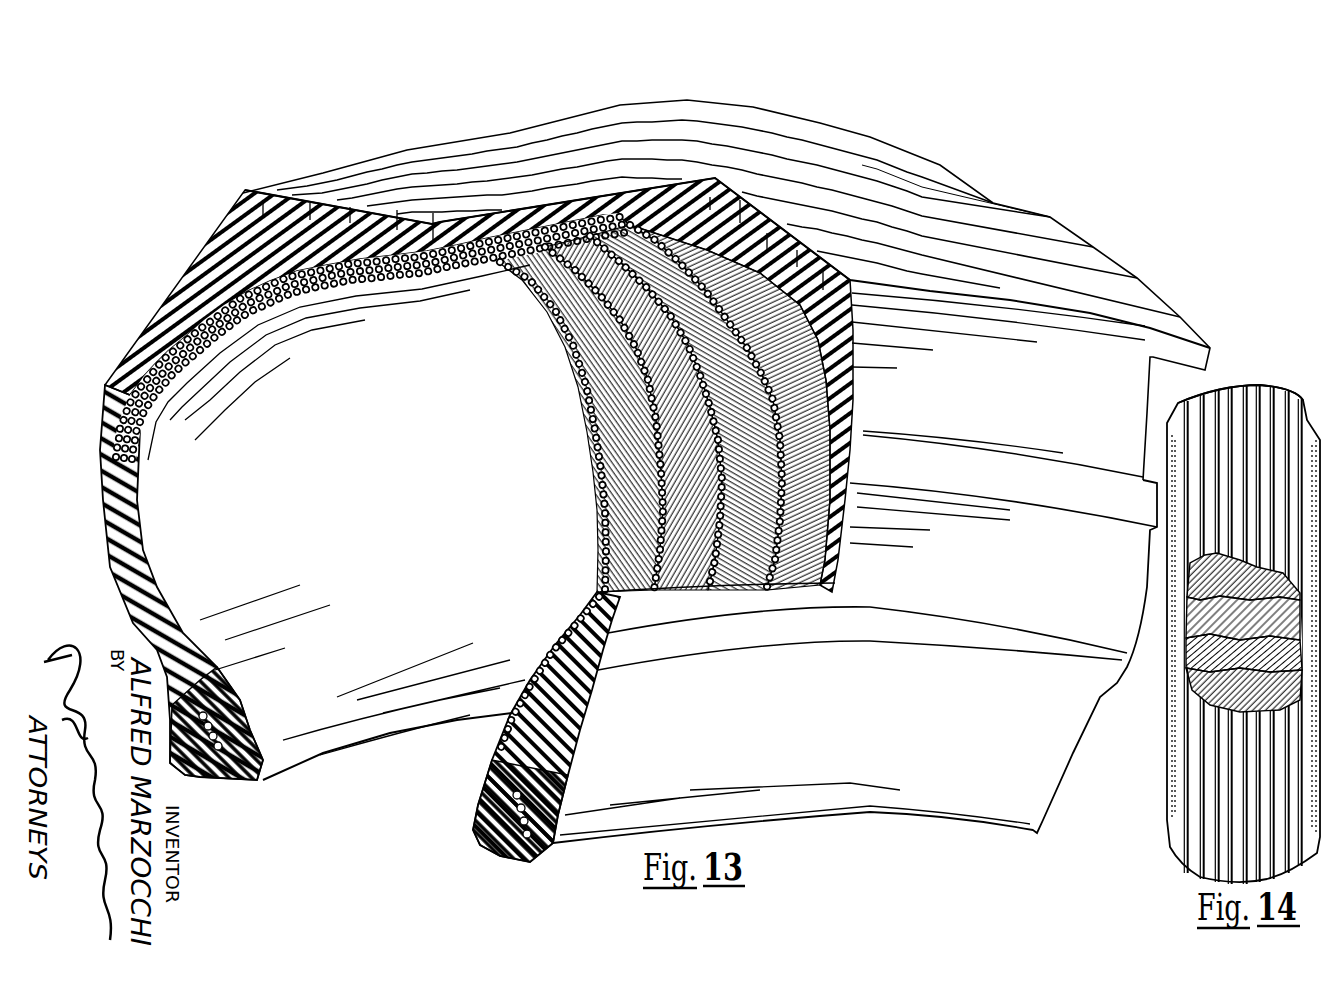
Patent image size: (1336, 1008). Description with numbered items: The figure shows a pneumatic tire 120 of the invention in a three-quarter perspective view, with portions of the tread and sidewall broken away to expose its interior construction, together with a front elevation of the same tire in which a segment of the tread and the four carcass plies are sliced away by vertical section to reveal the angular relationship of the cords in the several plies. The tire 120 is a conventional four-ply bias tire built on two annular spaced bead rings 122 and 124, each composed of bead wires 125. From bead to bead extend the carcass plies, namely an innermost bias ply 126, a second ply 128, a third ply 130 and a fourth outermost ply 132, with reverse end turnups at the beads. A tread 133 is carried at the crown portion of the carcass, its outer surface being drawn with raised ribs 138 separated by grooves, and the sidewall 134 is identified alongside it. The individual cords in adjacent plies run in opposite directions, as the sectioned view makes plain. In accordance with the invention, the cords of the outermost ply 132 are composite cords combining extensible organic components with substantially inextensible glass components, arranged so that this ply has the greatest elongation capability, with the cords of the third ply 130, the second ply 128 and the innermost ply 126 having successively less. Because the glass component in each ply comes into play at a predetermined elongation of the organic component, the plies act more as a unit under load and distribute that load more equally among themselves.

In FIG. 13, the tire 120 is at (1092, 215).
In FIG. 14, the tire 120 is at (1160, 822).
In FIG. 13, the bead ring 122 is at (233, 788).
In FIG. 13, the bead ring 124 is at (505, 845).
In FIG. 13, the bead wires 125 is at (240, 688).
In FIG. 13, the innermost bias ply 126 is at (640, 580).
In FIG. 14, the innermost bias ply 126 is at (1250, 700).
In FIG. 13, the second ply 128 is at (687, 577).
In FIG. 14, the second ply 128 is at (1230, 712).
In FIG. 13, the third ply 130 is at (747, 570).
In FIG. 14, the third ply 130 is at (1237, 663).
In FIG. 13, the fourth outermost ply 132 is at (803, 570).
In FIG. 14, the fourth outermost ply 132 is at (1217, 583).
In FIG. 13, the tread 133 is at (940, 170).
In FIG. 14, the tread 133 is at (1277, 390).
In FIG. 13, the sidewall 134 is at (391, 476).
In FIG. 13, the rib 138 is at (993, 205).
In FIG. 14, the rib 138 is at (1278, 358).